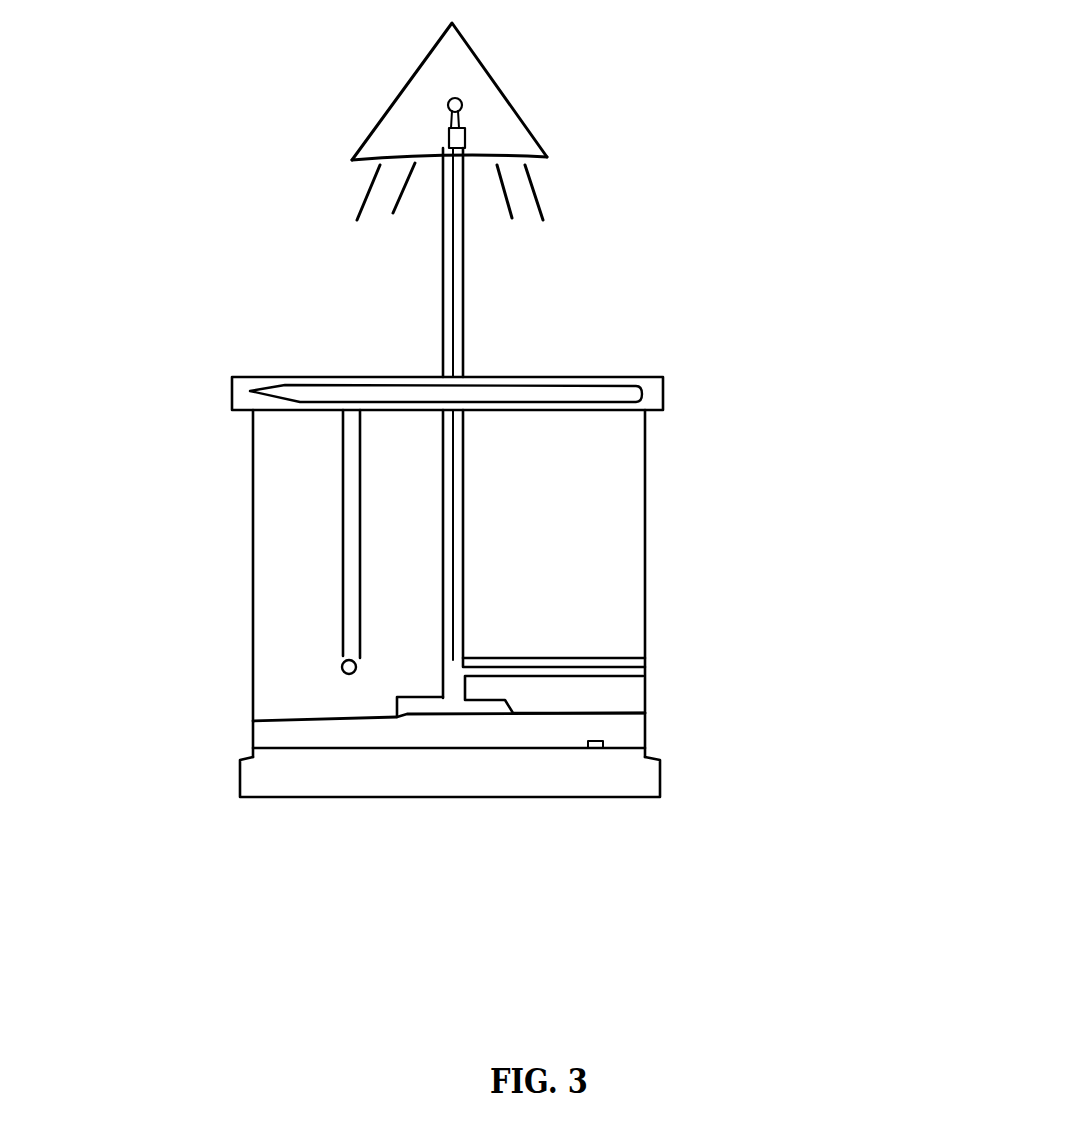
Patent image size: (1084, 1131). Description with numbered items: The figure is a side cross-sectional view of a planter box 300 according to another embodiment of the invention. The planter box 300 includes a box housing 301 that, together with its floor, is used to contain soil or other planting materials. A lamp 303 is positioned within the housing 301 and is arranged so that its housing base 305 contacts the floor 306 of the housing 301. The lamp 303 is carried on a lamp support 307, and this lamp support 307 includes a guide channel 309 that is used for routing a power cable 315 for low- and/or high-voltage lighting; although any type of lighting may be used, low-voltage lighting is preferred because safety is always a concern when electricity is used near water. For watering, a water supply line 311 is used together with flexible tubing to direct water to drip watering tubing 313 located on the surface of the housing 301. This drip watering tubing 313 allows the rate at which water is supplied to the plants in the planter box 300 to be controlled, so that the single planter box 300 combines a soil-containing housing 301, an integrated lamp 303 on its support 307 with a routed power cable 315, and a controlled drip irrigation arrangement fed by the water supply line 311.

The planter box 300 is at (817, 782).
The box housing 301 is at (253, 563).
The lamp 303 is at (513, 100).
The housing base 305 is at (405, 712).
The floor 306 is at (592, 743).
The lamp support 307 is at (460, 517).
The guide channel 309 is at (637, 677).
The water supply line 311 is at (341, 671).
The drip watering tubing 313 is at (647, 377).
The power cable 315 is at (617, 658).